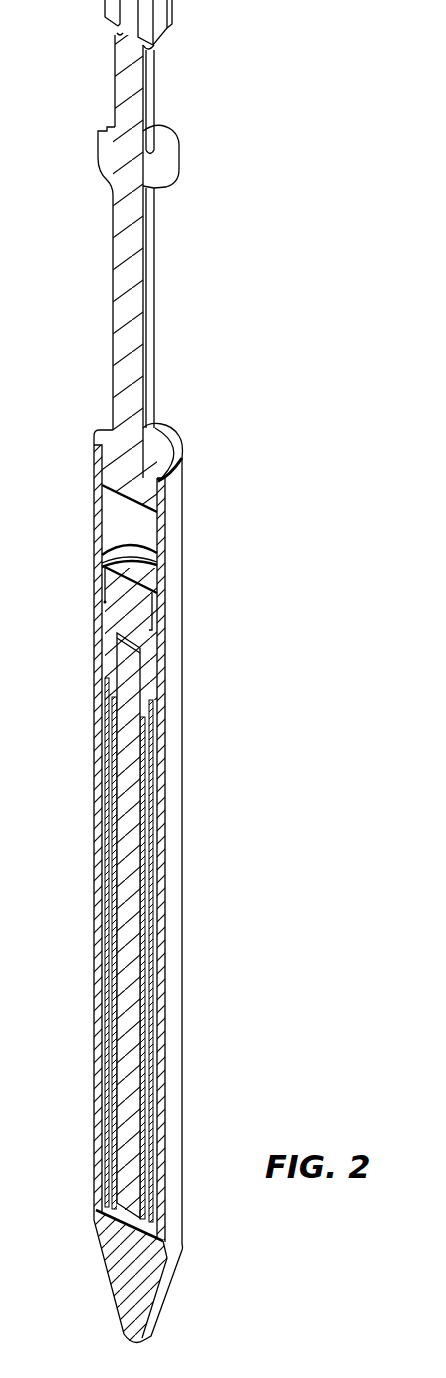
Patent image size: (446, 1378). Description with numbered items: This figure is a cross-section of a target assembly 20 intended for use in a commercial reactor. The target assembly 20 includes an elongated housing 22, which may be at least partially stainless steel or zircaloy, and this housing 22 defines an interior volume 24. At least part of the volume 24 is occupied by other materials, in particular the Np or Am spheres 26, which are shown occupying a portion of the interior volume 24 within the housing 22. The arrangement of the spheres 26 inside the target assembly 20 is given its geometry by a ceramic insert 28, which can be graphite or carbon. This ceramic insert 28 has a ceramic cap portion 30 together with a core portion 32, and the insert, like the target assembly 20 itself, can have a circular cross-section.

The target assembly 20 is at (225, 410).
The housing 22 is at (173, 560).
The volume 24 is at (120, 537).
The spheres 26 is at (148, 750).
The ceramic insert 28 is at (150, 848).
The ceramic cap portion 30 is at (128, 617).
The core portion 32 is at (130, 675).